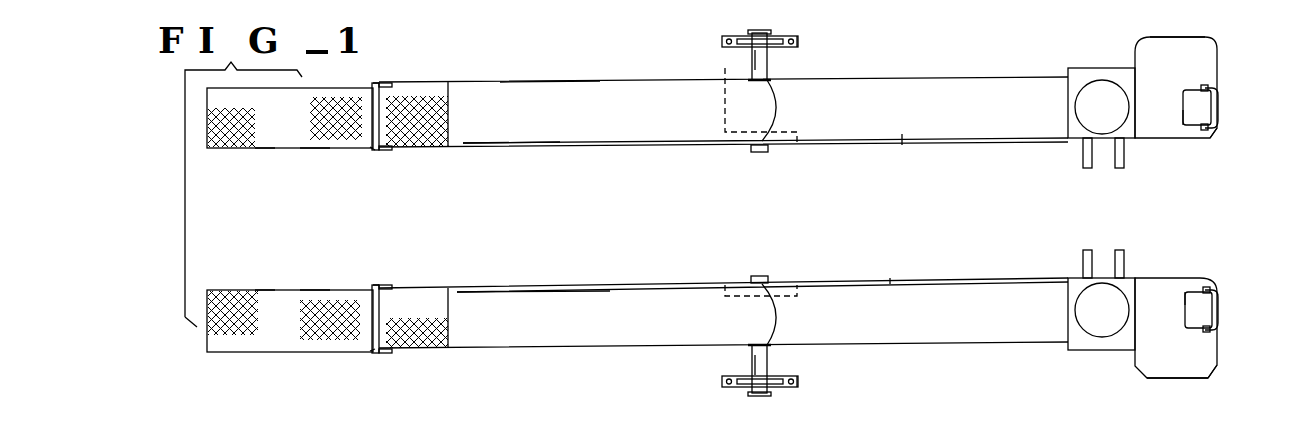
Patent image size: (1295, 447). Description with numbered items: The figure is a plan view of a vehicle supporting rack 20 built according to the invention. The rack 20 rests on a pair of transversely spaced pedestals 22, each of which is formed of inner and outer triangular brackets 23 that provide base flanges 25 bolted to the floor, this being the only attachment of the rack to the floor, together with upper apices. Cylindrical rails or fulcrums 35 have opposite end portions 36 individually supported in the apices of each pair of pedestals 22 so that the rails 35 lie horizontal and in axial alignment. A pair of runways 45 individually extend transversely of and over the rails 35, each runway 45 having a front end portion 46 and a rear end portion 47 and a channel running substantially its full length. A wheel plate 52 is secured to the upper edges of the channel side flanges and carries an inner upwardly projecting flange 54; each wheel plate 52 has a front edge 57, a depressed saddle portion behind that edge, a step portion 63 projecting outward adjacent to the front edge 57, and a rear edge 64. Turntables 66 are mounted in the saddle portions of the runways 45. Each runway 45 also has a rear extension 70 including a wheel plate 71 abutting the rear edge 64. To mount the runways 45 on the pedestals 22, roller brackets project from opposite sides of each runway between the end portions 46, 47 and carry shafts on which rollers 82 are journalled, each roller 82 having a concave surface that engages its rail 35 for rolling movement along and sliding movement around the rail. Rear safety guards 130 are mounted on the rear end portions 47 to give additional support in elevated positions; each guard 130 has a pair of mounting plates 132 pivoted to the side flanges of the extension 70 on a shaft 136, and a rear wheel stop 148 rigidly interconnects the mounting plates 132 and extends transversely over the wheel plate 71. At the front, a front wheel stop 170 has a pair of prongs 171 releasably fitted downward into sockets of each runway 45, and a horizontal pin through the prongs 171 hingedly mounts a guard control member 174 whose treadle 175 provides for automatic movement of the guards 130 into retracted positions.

The vehicle supporting rack 20 is at (546, 77).
The pedestal 22 is at (792, 126).
The triangular bracket 23 is at (738, 40).
The base flange 25 is at (727, 66).
The cylindrical rail 35 is at (772, 62).
The end portion 36 is at (762, 42).
The runway 45 is at (890, 279).
The front end portion 46 is at (1143, 113).
The rear end portion 47 is at (277, 140).
The wheel plate 52 is at (596, 119).
The inner upwardly projecting flange 54 is at (550, 147).
The front edge 57 is at (1215, 43).
The step portion 63 is at (1168, 40).
The rear edge 64 is at (451, 97).
The turntable 66 is at (1089, 119).
The rear extension 70 is at (306, 290).
The wheel plate 71 is at (283, 119).
The roller 82 is at (782, 212).
The rear safety guard 130 is at (383, 153).
The mounting plate 132 is at (386, 93).
The shaft 136 is at (391, 85).
The rear wheel stop 148 is at (373, 150).
The front wheel stop 170 is at (1218, 106).
The prong 171 is at (1207, 87).
The guard control member 174 is at (1185, 125).
The treadle 175 is at (1190, 90).